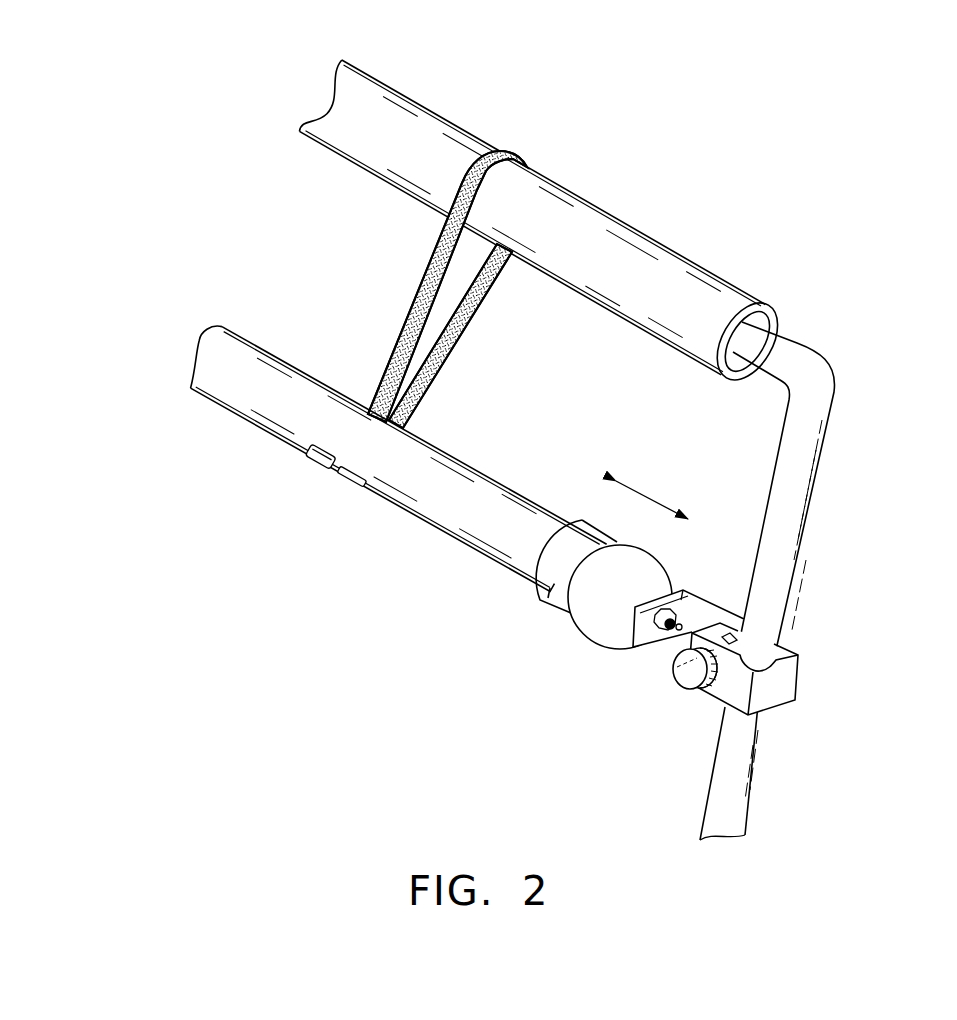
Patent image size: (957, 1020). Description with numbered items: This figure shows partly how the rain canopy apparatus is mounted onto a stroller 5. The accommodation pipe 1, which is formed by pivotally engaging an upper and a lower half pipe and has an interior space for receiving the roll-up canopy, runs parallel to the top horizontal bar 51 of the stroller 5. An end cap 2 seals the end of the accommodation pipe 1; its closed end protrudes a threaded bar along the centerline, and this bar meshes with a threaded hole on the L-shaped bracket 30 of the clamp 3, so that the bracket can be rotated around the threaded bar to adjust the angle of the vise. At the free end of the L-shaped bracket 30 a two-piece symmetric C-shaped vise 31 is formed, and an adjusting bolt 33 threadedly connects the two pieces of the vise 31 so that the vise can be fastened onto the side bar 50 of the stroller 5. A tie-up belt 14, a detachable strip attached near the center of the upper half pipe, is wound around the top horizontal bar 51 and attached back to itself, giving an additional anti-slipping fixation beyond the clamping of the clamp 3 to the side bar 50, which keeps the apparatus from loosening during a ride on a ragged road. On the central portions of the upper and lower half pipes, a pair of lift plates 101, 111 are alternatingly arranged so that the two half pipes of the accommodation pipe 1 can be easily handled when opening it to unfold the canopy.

The accommodation pipe 1 is at (187, 338).
The lift plate 101 is at (319, 466).
The lift plate 111 is at (343, 486).
The tie-up belt 14 is at (460, 323).
The end cap 2 is at (587, 630).
The clamp 3 is at (763, 675).
The L-shaped bracket 30 is at (715, 605).
The C-shaped vise 31 is at (798, 683).
The adjusting bolt 33 is at (685, 692).
The stroller 5 is at (623, 449).
The side bar 50 is at (812, 507).
The top horizontal bar 51 is at (657, 237).